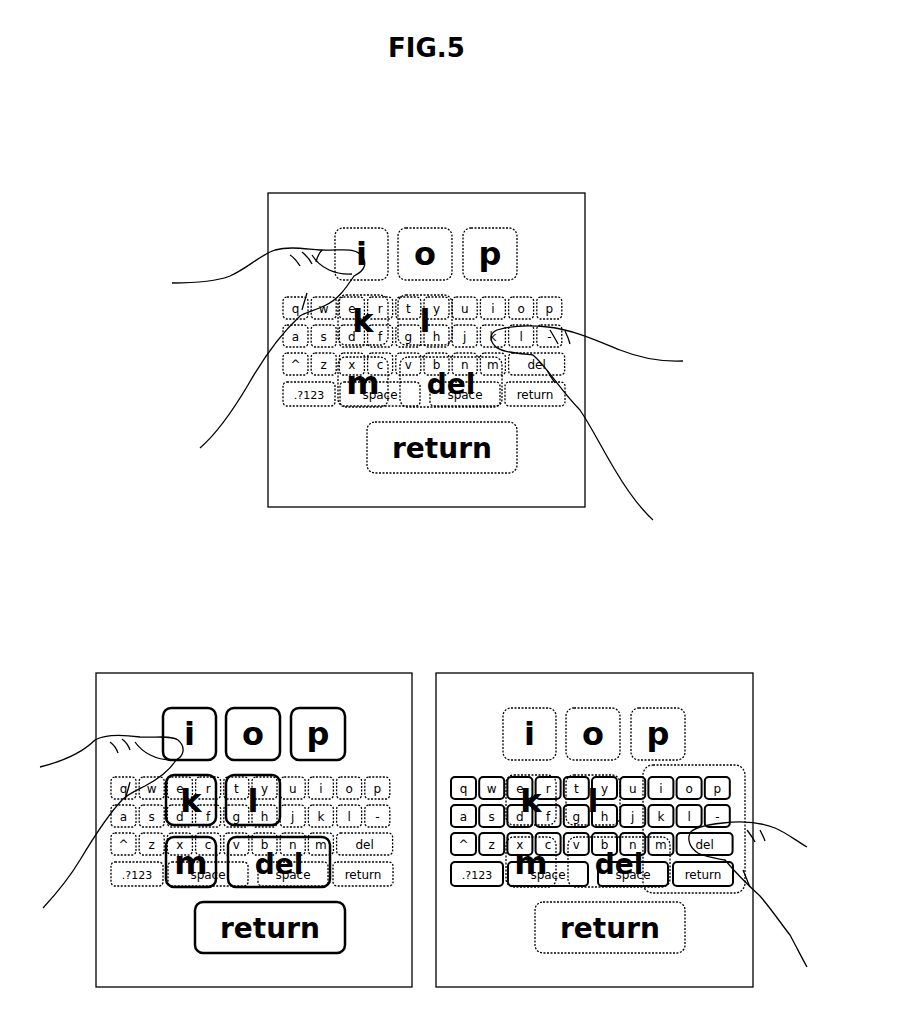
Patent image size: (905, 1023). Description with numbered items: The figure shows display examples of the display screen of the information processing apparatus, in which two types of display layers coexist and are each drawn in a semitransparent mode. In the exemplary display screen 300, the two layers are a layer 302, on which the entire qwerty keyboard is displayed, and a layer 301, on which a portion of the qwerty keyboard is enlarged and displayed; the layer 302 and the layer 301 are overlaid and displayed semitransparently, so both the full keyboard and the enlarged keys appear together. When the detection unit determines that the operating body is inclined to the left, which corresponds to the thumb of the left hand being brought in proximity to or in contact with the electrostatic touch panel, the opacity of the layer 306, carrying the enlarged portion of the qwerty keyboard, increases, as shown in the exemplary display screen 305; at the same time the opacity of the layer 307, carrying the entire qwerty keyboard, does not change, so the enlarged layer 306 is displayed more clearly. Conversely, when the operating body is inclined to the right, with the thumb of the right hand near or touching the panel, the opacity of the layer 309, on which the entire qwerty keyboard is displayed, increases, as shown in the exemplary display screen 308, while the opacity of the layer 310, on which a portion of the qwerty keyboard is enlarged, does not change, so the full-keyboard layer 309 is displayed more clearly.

The exemplary display screen 300 is at (502, 192).
The layer 301 is at (518, 248).
The layer 302 is at (567, 302).
The exemplary display screen 305 is at (328, 673).
The layer 306 is at (197, 708).
The layer 307 is at (115, 884).
The exemplary display screen 308 is at (668, 672).
The layer 309 is at (740, 765).
The layer 310 is at (685, 728).